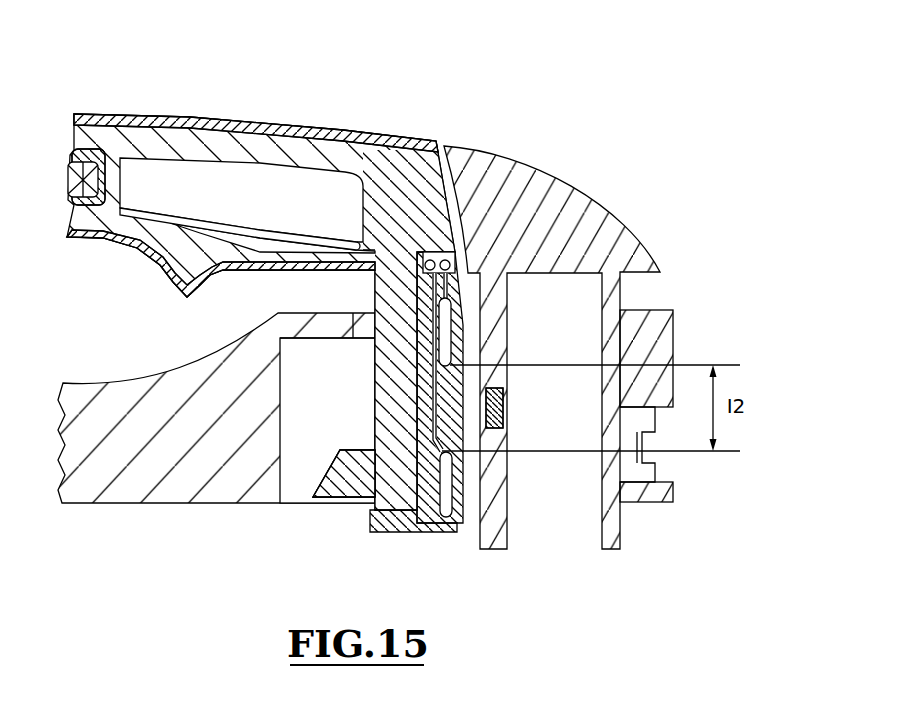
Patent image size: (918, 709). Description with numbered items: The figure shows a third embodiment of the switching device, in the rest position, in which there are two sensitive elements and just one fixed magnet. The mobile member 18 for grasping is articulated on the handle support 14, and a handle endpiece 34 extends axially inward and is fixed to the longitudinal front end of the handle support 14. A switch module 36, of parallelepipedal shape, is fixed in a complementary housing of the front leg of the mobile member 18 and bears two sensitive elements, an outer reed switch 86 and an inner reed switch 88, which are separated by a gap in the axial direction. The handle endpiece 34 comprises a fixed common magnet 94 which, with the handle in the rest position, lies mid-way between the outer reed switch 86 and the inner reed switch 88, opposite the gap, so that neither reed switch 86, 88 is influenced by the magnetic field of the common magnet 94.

The handle support 14 is at (183, 515).
The mobile member for grasping 18 is at (284, 108).
The handle endpiece 34 is at (558, 326).
The switch module 36 is at (451, 413).
The outer reed switch 86 is at (443, 330).
The inner reed switch 88 is at (445, 488).
The fixed common magnet 94 is at (504, 405).